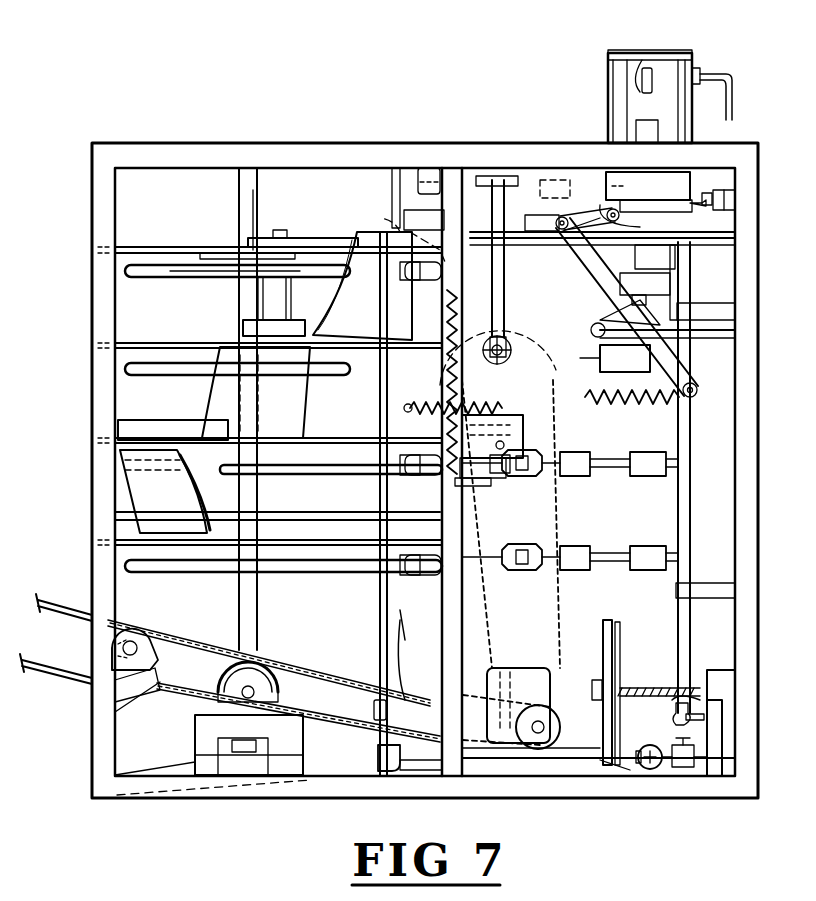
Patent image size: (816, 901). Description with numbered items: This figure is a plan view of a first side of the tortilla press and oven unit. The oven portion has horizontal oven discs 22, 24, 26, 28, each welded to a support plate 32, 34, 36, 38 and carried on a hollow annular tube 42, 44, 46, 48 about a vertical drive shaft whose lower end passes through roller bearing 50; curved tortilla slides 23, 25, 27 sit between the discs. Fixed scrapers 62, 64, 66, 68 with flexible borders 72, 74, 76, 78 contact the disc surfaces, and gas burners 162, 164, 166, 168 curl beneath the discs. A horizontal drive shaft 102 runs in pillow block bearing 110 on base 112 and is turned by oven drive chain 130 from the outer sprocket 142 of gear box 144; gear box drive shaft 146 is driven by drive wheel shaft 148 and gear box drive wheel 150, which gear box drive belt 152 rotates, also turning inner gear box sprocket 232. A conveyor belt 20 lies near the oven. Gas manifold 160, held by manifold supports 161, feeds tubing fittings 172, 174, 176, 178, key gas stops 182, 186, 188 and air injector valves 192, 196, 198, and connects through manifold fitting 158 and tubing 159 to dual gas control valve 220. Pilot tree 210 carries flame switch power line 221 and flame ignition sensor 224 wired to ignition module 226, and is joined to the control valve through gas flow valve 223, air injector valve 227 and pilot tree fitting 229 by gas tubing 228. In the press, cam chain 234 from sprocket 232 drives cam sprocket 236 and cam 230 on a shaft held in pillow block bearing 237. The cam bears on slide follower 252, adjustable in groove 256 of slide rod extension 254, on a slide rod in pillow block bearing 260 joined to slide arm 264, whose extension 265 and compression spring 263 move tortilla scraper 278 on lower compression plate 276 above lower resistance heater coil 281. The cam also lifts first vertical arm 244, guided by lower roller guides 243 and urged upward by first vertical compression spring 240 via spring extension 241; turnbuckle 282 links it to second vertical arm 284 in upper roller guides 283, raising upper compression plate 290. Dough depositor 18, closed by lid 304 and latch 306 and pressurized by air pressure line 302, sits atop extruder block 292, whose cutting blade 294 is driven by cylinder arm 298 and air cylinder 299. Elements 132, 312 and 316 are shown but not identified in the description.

The dough depositor 18 is at (608, 81).
The belt 20 is at (62, 598).
The oven disc 22 is at (218, 246).
The curved tortilla slide 23 is at (355, 320).
The oven disc 24 is at (188, 342).
The curved tortilla slide 25 is at (265, 418).
The oven disc 26 is at (205, 436).
The curved tortilla slide 27 is at (138, 507).
The oven disc 28 is at (300, 540).
The support plate 32 is at (205, 254).
The support plate 34 is at (270, 332).
The support plate 36 is at (300, 452).
The support plate 38 is at (312, 548).
The hollow annular tube 42 is at (236, 291).
The hollow annular tube 44 is at (305, 390).
The hollow annular tube 46 is at (258, 520).
The hollow annular tube 48 is at (257, 645).
The roller bearing 50 is at (252, 786).
The fixed scraper 62 is at (312, 237).
The fixed scraper 64 is at (275, 318).
The fixed scraper 66 is at (118, 426).
The fixed scraper 68 is at (216, 512).
The flexible horizontal border 72 is at (282, 219).
The flexible horizontal border 74 is at (243, 333).
The flexible horizontal border 76 is at (114, 436).
The flexible horizontal border 78 is at (120, 540).
The horizontal drive shaft 102 is at (224, 665).
The pillow block bearing 110 is at (278, 689).
The base 112 is at (194, 731).
The oven drive chain 130 is at (318, 672).
The pulley 132 is at (236, 686).
The outer sprocket 142 is at (525, 760).
The gear box 144 is at (517, 668).
The gear box drive shaft 146 is at (545, 750).
The drive wheel shaft 148 is at (596, 680).
The gear box drive wheel 150 is at (614, 655).
The gear box drive belt 152 is at (610, 620).
The manifold fitting 158 is at (676, 712).
The tubing 159 is at (700, 703).
The gas manifold 160 is at (700, 500).
The manifold supports 161 is at (702, 582).
The gas burner 162 is at (180, 278).
The gas burner 164 is at (172, 376).
The gas burner 166 is at (308, 466).
The gas burner 168 is at (218, 573).
The tubing fitting 172 is at (679, 270).
The tubing fitting 174 is at (512, 348).
The tubing fitting 176 is at (644, 452).
The tubing fitting 178 is at (640, 546).
The key gas stop 182 is at (530, 240).
The key gas stop 186 is at (572, 452).
The key gas stop 188 is at (572, 546).
The air injector valve 192 is at (540, 310).
The air injector valve 196 is at (535, 448).
The air injector valve 198 is at (520, 572).
The pilot tree 210 is at (378, 586).
The dual gas control valve 220 is at (735, 742).
The flame switch power line 221 is at (402, 650).
The key gas stop 223 is at (690, 770).
The flame ignition sensor 224 is at (372, 722).
The ignition module 226 is at (722, 670).
The air injector valve 227 is at (650, 770).
The gas tubing 228 is at (410, 772).
The pilot tree fitting 229 is at (378, 757).
The cam 230 is at (400, 380).
The inner gear box sprocket 232 is at (557, 660).
The cam chain 234 is at (485, 535).
The cam sprocket 236 is at (604, 370).
The pillow block bearing 237 is at (632, 407).
The first vertical compression spring 240 is at (478, 478).
The spring extension 241 is at (470, 490).
The lower roller guides 243 is at (405, 414).
The first vertical arm 244 is at (512, 470).
The slide follower 252 is at (662, 330).
The slide rod extension 254 is at (710, 335).
The groove 256 is at (712, 320).
The pillow block bearing 260 is at (672, 290).
The compression spring 263 is at (668, 402).
The slide arm 264 is at (627, 302).
The extension 265 is at (649, 191).
The lower compression plate 276 is at (640, 228).
The tortilla scraper 278 is at (395, 212).
The lower resistance heater coil 281 is at (498, 176).
The adjustable turnbuckle 282 is at (520, 350).
The upper roller guides 283 is at (418, 199).
The second vertical arm 284 is at (475, 345).
The upper compression plate 290 is at (430, 170).
The extruder block 292 is at (736, 236).
The cutting blade 294 is at (698, 200).
The cylinder arm 298 is at (712, 198).
The air cylinder 299 is at (736, 202).
The air pressure line 302 is at (734, 78).
The lid 304 is at (690, 60).
The latch 306 is at (647, 66).
The pin 312 is at (122, 644).
The pulley 316 is at (128, 636).